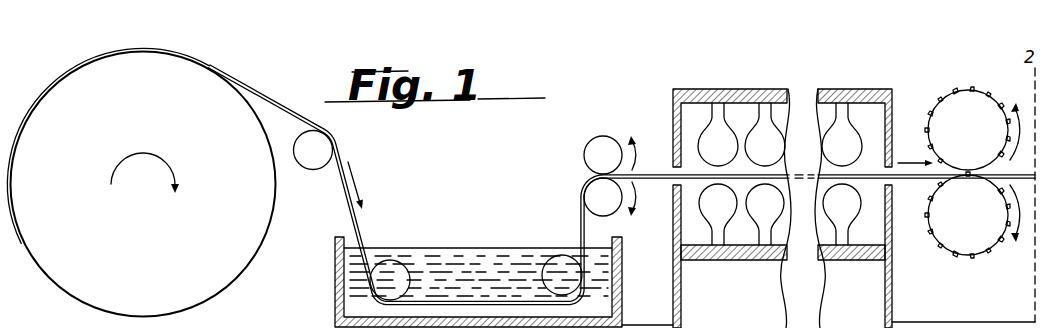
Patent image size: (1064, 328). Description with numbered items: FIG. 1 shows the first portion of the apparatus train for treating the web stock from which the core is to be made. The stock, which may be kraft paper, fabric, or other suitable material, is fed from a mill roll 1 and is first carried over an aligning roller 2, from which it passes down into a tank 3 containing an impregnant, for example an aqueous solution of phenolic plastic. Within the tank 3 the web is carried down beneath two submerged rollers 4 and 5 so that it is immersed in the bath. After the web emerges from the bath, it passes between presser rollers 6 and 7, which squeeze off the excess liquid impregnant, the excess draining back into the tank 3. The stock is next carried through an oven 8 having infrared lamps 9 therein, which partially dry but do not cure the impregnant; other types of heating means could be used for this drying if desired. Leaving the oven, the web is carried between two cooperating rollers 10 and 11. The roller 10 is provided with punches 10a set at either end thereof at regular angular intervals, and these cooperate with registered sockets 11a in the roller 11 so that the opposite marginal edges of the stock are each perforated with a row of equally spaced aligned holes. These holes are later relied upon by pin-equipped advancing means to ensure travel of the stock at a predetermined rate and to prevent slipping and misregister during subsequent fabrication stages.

The mill roll 1 is at (40, 268).
The aligning roller 2 is at (300, 166).
The tank 3 is at (335, 283).
The submerged roller 4 is at (394, 270).
The submerged roller 5 is at (554, 268).
The presser roller 6 is at (613, 213).
The presser roller 7 is at (609, 137).
The oven 8 is at (718, 89).
The infrared lamps 9 is at (764, 110).
The cooperating roller 10 is at (979, 74).
The punches 10a is at (990, 94).
The cooperating roller 11 is at (966, 254).
The registered sockets 11a is at (932, 244).